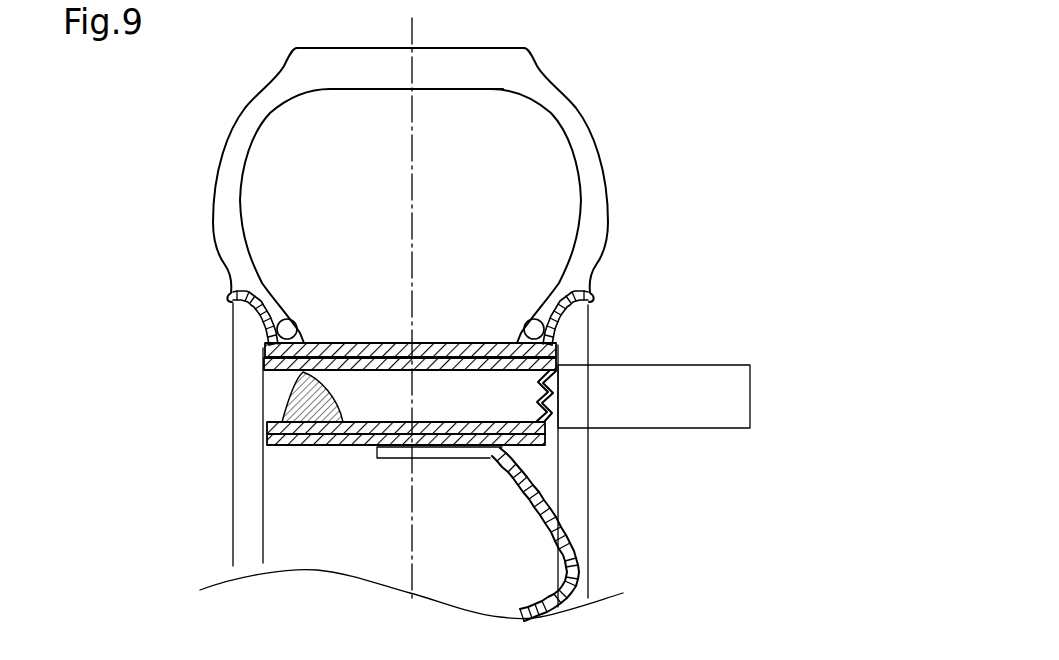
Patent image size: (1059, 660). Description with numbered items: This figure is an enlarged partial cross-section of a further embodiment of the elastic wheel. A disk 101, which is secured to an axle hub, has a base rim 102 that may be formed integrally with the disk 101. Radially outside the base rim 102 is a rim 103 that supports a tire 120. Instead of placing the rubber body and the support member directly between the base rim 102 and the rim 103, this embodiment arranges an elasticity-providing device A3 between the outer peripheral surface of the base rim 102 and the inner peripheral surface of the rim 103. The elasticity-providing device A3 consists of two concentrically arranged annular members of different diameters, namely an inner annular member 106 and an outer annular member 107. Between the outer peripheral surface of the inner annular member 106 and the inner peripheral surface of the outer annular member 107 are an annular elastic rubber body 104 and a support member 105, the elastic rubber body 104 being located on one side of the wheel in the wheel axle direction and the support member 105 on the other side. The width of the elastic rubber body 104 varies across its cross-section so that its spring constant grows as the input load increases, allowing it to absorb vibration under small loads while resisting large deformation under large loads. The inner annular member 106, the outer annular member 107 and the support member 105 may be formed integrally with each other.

The tire 120 is at (582, 133).
The rim 103 is at (590, 297).
The outer annular member 107 is at (557, 361).
The support member 105 is at (556, 410).
The annular elastic rubber body 104 is at (298, 390).
The inner annular member 106 is at (265, 421).
The base rim 102 is at (546, 445).
The disk 101 is at (575, 563).
The elasticity-providing device A3 is at (750, 394).